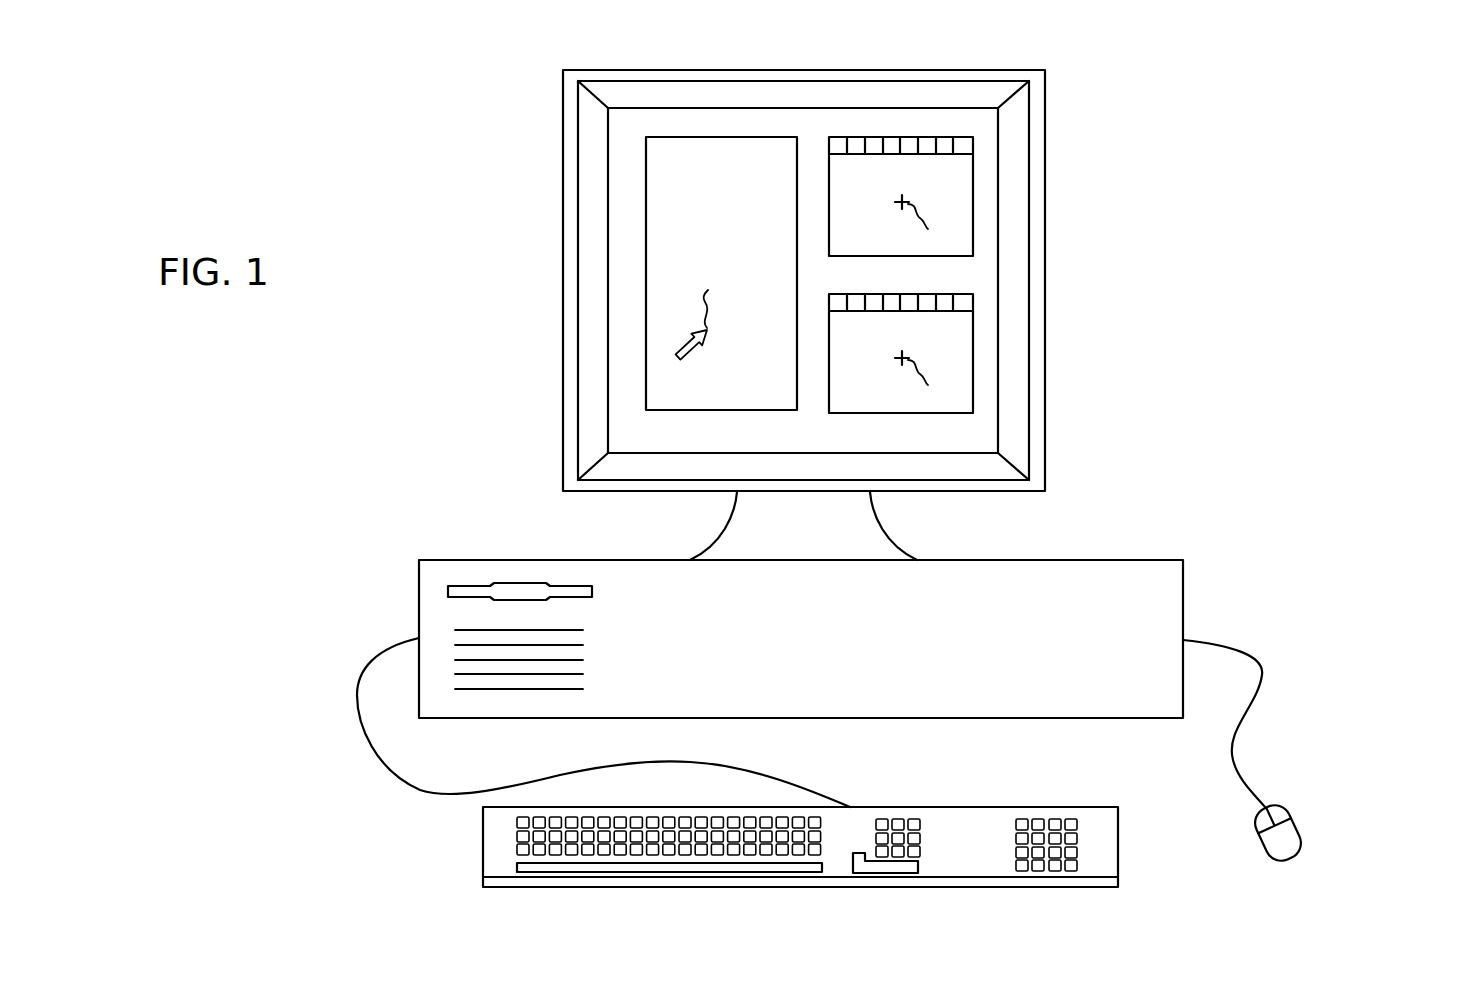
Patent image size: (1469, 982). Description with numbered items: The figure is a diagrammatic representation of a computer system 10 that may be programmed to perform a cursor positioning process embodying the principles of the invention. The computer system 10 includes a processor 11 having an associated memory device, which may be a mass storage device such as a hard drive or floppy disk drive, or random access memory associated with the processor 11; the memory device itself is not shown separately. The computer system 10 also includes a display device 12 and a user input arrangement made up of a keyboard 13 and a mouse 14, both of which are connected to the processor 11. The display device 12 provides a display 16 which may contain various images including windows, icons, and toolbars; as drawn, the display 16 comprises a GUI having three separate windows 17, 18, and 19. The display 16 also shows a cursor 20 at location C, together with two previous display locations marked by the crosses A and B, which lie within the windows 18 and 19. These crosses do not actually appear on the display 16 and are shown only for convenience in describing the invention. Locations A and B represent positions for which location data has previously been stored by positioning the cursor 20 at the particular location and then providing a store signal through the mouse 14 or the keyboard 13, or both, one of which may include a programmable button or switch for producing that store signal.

The computer system 10 is at (1112, 272).
The processor 11 is at (1183, 608).
The display device 12 is at (1045, 152).
The keyboard 13 is at (1002, 807).
The mouse 14 is at (1303, 830).
The display 16 is at (628, 172).
The window 17 is at (750, 137).
The window 18 is at (910, 137).
The window 19 is at (972, 375).
The cursor 20 is at (686, 343).